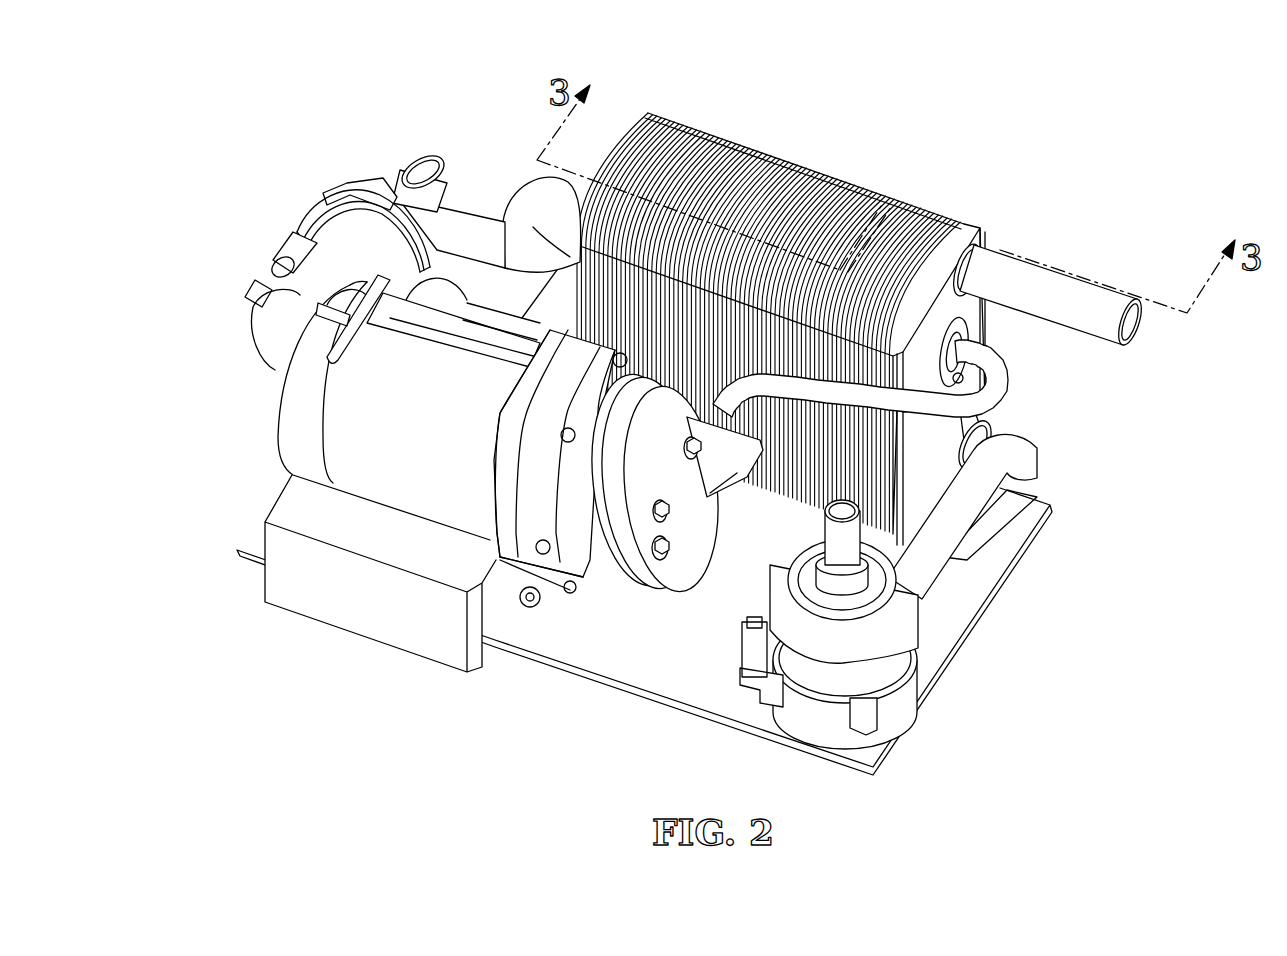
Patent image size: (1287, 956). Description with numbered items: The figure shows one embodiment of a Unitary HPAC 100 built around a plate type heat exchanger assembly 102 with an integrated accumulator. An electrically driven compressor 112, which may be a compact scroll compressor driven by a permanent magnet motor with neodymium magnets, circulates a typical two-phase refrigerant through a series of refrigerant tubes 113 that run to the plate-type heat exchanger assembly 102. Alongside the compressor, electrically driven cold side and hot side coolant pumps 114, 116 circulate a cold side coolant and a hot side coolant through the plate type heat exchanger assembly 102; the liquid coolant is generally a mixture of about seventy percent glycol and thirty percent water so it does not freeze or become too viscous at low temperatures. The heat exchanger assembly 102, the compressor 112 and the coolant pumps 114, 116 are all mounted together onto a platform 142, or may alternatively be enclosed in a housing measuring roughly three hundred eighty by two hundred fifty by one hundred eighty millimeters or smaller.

The Unitary HPAC 100 is at (1033, 146).
The plate type heat exchanger assembly 102 is at (842, 200).
The electrically driven compressor 112 is at (352, 417).
The refrigerant tubes 113 is at (997, 393).
The cold side coolant pump 114 is at (885, 713).
The hot side coolant pump 116 is at (277, 328).
The platform 142 is at (657, 658).